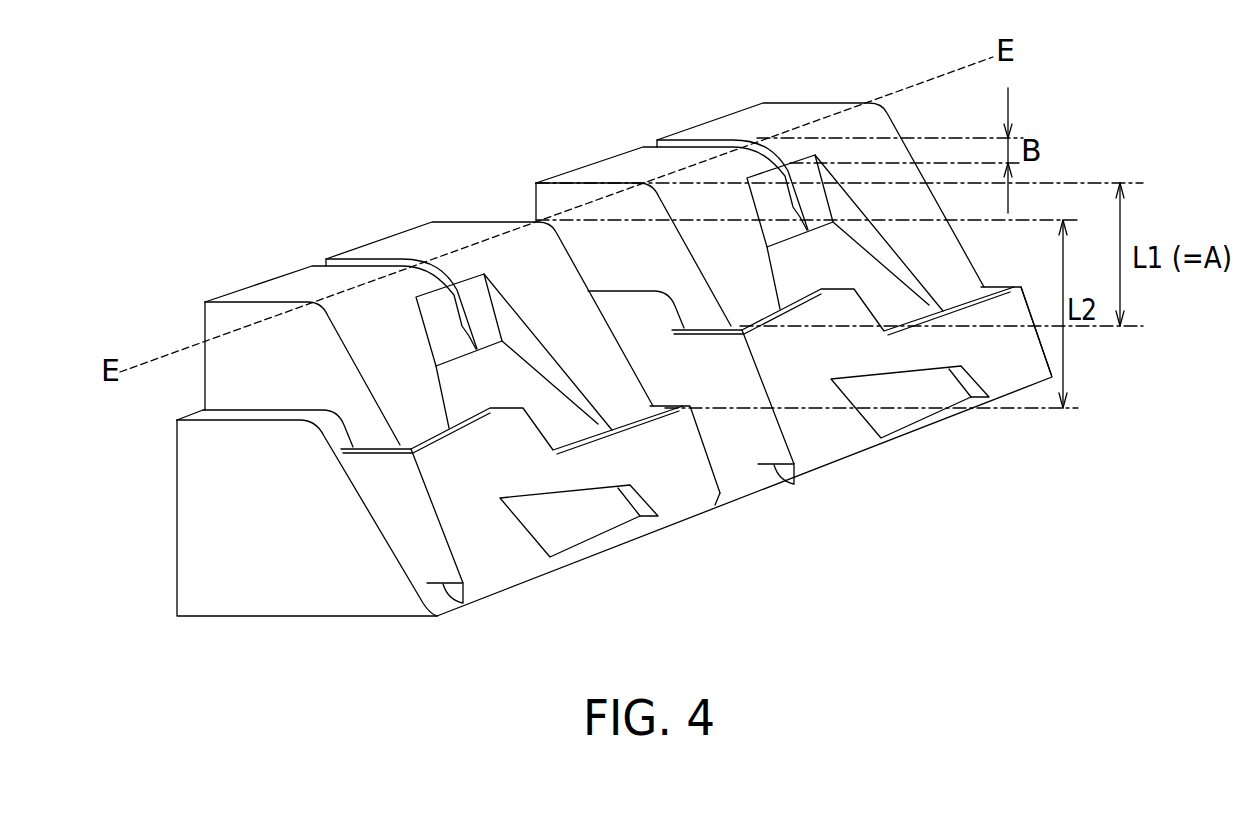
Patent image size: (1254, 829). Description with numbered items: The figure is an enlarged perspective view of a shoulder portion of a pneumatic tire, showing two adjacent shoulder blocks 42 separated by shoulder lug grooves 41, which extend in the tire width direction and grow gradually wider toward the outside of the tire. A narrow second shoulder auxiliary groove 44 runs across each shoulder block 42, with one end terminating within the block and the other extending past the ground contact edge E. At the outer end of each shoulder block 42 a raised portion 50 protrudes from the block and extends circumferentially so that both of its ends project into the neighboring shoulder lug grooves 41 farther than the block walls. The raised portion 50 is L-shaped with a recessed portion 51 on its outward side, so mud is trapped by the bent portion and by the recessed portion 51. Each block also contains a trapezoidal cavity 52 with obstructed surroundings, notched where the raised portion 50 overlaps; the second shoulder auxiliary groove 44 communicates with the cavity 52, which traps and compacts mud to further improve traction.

The shoulder lug groove 41 is at (742, 487).
The shoulder block 42 is at (287, 287).
The second shoulder auxiliary groove 44 is at (345, 258).
The raised portion 50 is at (490, 558).
The recessed portion 51 is at (570, 505).
The cavity 52 is at (495, 378).